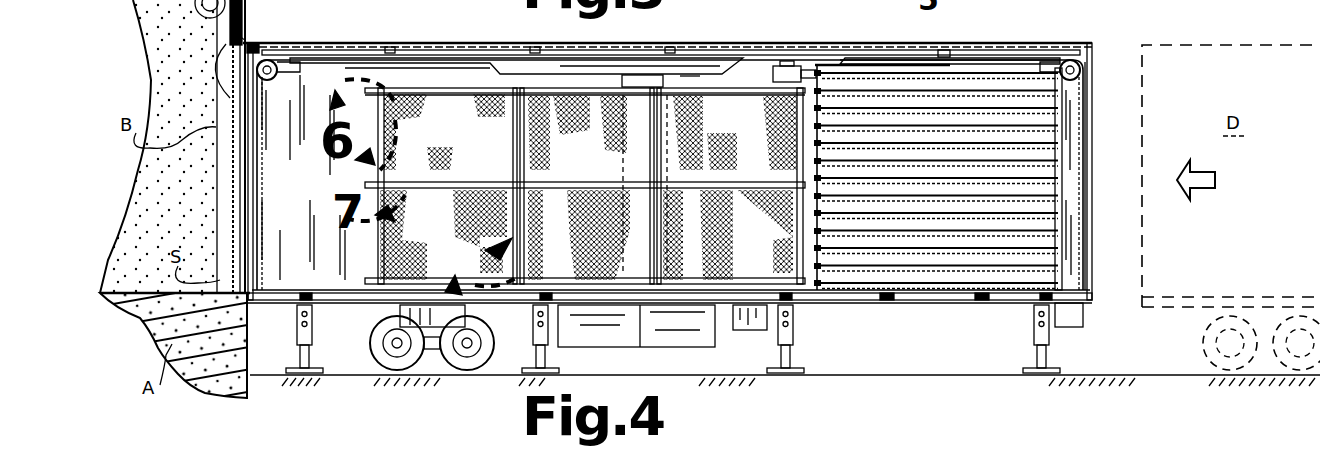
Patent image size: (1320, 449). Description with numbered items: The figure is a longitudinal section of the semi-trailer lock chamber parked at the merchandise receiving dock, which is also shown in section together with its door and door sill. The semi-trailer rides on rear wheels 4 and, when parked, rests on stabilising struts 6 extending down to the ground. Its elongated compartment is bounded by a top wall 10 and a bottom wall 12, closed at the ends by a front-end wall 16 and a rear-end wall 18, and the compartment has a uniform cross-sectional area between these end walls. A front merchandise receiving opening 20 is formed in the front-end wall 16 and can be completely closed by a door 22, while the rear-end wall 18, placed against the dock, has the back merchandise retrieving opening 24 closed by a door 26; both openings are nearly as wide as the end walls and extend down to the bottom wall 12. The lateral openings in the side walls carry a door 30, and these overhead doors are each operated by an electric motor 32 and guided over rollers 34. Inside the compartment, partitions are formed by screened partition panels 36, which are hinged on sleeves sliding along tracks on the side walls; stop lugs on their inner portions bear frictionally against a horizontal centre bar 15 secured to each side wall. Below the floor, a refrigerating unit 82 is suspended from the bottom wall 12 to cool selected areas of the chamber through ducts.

The rear wheels 4 is at (370, 346).
The stabilising struts 6 is at (297, 344).
The top wall 10 is at (918, 45).
The bottom wall 12 is at (920, 297).
The centre bar 15 is at (746, 162).
The front-end wall 16 is at (1092, 221).
The rear-end wall 18 is at (249, 175).
The front merchandise receiving opening 20 is at (467, 260).
The door 22 is at (1083, 126).
The back merchandise retrieving opening 24 is at (246, 34).
The door 26 is at (260, 237).
The door 30 is at (1042, 158).
The electric motor 32 is at (773, 60).
The rollers 34 is at (290, 56).
The partition panels 36 is at (446, 116).
The refrigerating unit 82 is at (668, 325).